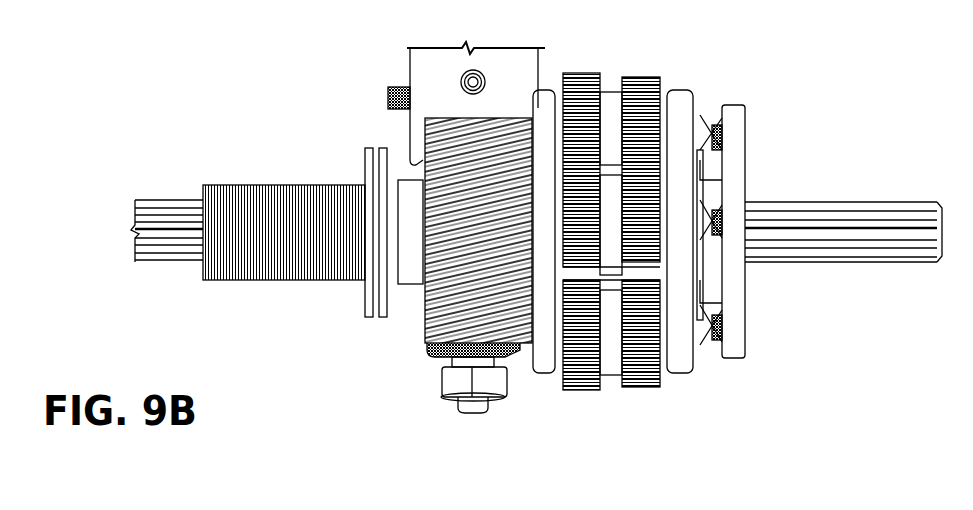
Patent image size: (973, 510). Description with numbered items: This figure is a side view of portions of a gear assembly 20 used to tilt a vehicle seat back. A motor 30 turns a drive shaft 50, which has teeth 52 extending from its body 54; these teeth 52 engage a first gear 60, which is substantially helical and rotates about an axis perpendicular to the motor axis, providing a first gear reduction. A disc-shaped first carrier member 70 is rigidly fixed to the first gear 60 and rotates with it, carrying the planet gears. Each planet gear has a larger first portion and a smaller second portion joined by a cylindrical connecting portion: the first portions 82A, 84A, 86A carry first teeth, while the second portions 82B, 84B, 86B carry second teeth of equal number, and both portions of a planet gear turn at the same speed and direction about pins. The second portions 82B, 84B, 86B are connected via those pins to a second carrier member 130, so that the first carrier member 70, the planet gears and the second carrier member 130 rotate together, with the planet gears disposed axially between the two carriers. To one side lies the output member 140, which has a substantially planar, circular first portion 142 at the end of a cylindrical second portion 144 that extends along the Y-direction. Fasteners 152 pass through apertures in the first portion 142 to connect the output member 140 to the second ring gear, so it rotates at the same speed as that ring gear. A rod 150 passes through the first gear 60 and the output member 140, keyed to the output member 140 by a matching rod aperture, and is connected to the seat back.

The gear assembly 20 is at (262, 87).
The motor 30 is at (402, 76).
The drive shaft 50 is at (422, 363).
The teeth 52 is at (512, 358).
The body 54 is at (477, 405).
The first gear 60 is at (420, 251).
The first carrier member 70 is at (538, 108).
The first portion of first planet gear 82A is at (585, 85).
The second portion of first planet gear 82B is at (642, 92).
The first portion of second planet gear 84A is at (575, 230).
The second portion of second planet gear 84B is at (632, 240).
The first portion of third planet gear 86A is at (590, 388).
The second portion of third planet gear 86B is at (640, 375).
The second carrier member 130 is at (678, 107).
The output member 140 is at (258, 279).
The first portion 142 is at (737, 180).
The second portion 144 is at (285, 183).
The rod 150 is at (853, 210).
The fasteners 152 is at (713, 112).